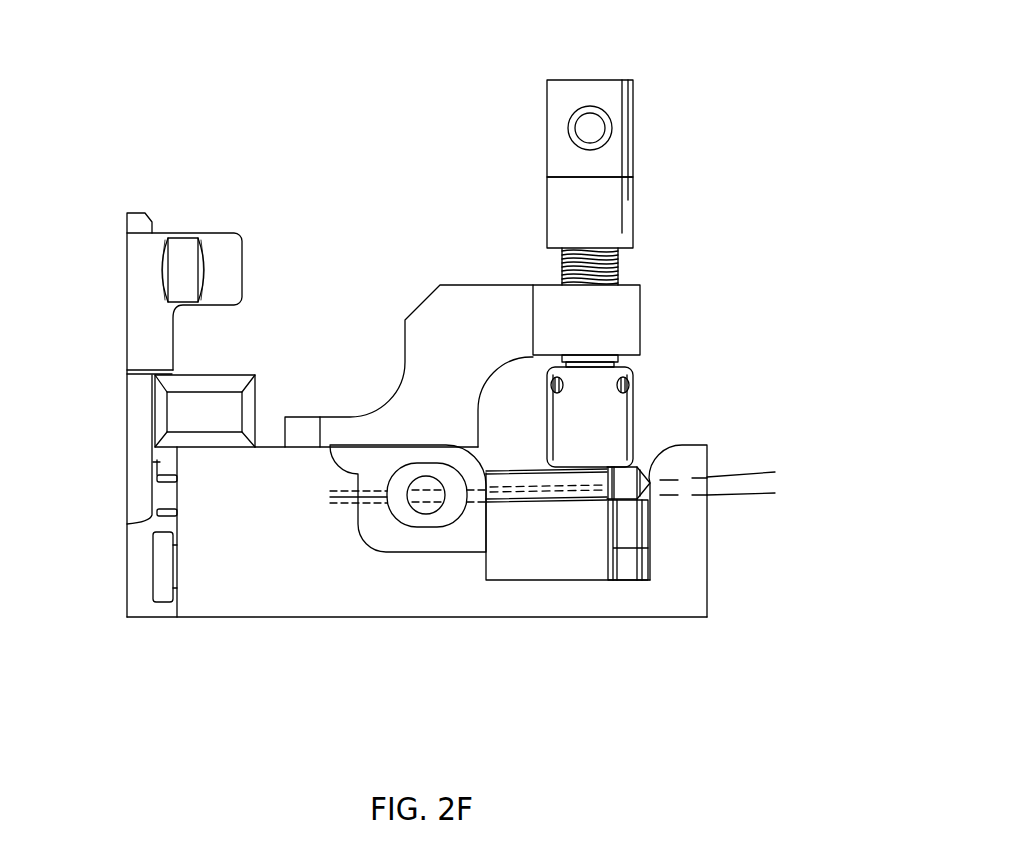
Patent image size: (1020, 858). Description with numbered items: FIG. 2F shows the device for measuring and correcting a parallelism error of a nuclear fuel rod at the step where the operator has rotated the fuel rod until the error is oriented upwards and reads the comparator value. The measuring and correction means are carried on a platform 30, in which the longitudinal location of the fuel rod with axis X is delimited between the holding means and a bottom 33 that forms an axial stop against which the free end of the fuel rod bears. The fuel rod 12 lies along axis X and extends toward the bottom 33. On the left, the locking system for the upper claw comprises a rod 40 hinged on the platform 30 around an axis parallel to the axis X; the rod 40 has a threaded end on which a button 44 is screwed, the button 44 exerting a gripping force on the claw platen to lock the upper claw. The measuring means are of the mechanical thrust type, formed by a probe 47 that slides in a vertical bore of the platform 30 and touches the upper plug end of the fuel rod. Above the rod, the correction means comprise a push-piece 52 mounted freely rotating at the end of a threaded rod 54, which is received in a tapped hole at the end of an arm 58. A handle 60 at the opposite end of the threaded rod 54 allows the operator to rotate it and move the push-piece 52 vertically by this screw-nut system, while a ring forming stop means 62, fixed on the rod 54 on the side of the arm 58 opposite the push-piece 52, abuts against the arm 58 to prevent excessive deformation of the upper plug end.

The elongate workpiece 12 is at (530, 480).
The platform 30 is at (366, 583).
The bottom 33 is at (687, 530).
The rod 40 is at (132, 462).
The button 44 is at (233, 248).
The probe 47 is at (617, 532).
The push-piece 52 is at (617, 440).
The threaded rod 54 is at (620, 260).
The arm 58 is at (625, 325).
The handle 60 is at (603, 120).
The stop means 62 is at (623, 203).
The axis X is at (747, 498).